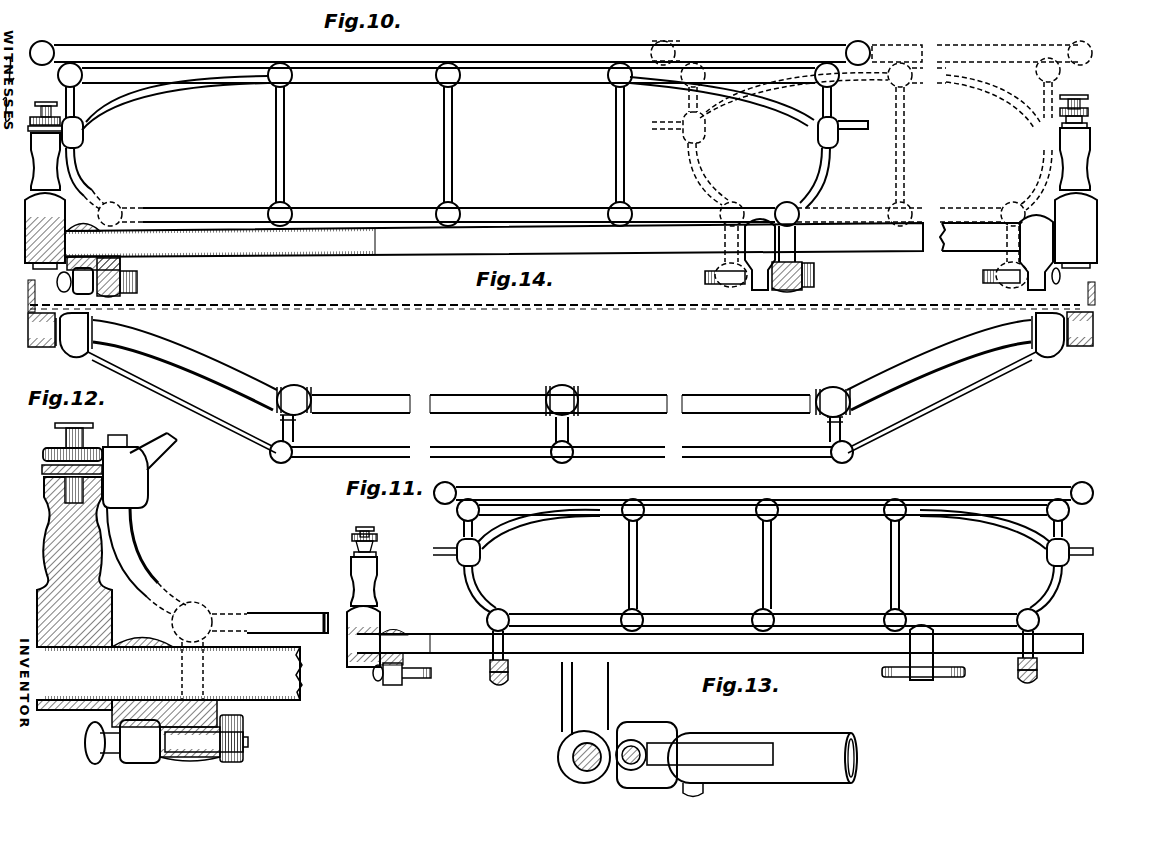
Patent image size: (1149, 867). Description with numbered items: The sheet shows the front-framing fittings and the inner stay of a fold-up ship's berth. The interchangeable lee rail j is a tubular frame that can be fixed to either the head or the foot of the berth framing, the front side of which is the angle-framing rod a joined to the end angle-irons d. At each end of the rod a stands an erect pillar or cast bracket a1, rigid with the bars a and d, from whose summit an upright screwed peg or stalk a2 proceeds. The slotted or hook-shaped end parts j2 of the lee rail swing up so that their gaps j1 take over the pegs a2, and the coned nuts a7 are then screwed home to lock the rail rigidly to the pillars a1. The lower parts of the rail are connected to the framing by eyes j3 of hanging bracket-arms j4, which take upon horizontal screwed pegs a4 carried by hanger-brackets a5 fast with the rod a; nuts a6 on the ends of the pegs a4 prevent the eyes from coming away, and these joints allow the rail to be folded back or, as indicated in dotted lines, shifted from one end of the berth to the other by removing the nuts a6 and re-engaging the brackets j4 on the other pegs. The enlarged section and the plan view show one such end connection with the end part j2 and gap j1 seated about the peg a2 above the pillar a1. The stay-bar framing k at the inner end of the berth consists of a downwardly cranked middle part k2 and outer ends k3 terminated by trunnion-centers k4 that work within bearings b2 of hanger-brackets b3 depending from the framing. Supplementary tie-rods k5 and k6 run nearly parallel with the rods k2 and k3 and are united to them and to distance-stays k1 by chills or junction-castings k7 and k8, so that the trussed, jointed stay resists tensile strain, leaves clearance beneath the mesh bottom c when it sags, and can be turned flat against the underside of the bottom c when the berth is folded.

In FIG. 10, the lee rail j is at (561, 164).
In FIG. 12, the lee rail j is at (217, 604).
In FIG. 11, the lee rail j is at (766, 556).
In FIG. 13, the lee rail j is at (752, 765).
In FIG. 13, the gap of slotted end part j1 is at (588, 736).
In FIG. 10, the slotted or hook-shaped end part j2 is at (62, 133).
In FIG. 12, the slotted or hook-shaped end part j2 is at (48, 468).
In FIG. 11, the slotted or hook-shaped end part j2 is at (456, 550).
In FIG. 13, the slotted or hook-shaped end part j2 is at (575, 772).
In FIG. 10, the eye j3 is at (130, 290).
In FIG. 12, the eye j3 is at (204, 762).
In FIG. 11, the eye j3 is at (497, 685).
In FIG. 10, the hanging bracket-arm j4 is at (120, 268).
In FIG. 12, the hanging bracket-arm j4 is at (176, 762).
In FIG. 11, the hanging bracket-arm j4 is at (508, 658).
In FIG. 10, the front angle-framing a is at (340, 252).
In FIG. 12, the front angle-framing a is at (173, 687).
In FIG. 11, the front angle-framing a is at (420, 682).
In FIG. 10, the pillar a1 is at (1092, 165).
In FIG. 12, the pillar a1 is at (61, 593).
In FIG. 11, the pillar a1 is at (380, 590).
In FIG. 10, the upright screwed peg a2 is at (1084, 118).
In FIG. 12, the upright screwed peg a2 is at (88, 452).
In FIG. 11, the upright screwed peg a2 is at (364, 543).
In FIG. 13, the upright screwed peg a2 is at (598, 770).
In FIG. 10, the horizontal screwed peg a4 is at (1000, 277).
In FIG. 12, the horizontal screwed peg a4 is at (238, 765).
In FIG. 11, the horizontal screwed peg a4 is at (905, 680).
In FIG. 10, the hanger-bracket a5 is at (73, 280).
In FIG. 12, the hanger-bracket a5 is at (142, 750).
In FIG. 11, the hanger-bracket a5 is at (653, 655).
In FIG. 10, the nut a6 is at (816, 278).
In FIG. 12, the nut a6 is at (244, 750).
In FIG. 10, the coned nut a7 is at (1082, 100).
In FIG. 12, the coned nut a7 is at (62, 452).
In FIG. 11, the coned nut a7 is at (365, 532).
In FIG. 13, the coned nut a7 is at (575, 762).
In FIG. 14, the bearing b2 is at (1094, 330).
In FIG. 14, the hanger-bracket b3 is at (1072, 350).
In FIG. 14, the berth bottom c is at (578, 308).
In FIG. 10, the end angle-iron d is at (28, 293).
In FIG. 14, the stay-bar framing k is at (561, 413).
In FIG. 14, the distance-stay k1 is at (283, 455).
In FIG. 14, the cranked middle part k2 is at (640, 394).
In FIG. 14, the outer end k3 is at (957, 361).
In FIG. 14, the trunnion-center k4 is at (1082, 346).
In FIG. 14, the supplementary tie-rod k5 is at (745, 455).
In FIG. 14, the supplementary tie-rod k6 is at (945, 410).
In FIG. 14, the junction-casting k7 is at (298, 390).
In FIG. 14, the junction-casting k8 is at (288, 437).